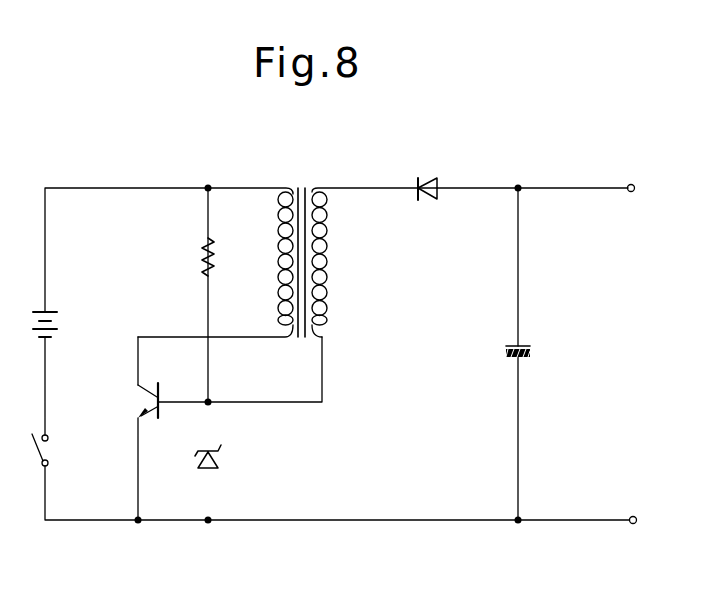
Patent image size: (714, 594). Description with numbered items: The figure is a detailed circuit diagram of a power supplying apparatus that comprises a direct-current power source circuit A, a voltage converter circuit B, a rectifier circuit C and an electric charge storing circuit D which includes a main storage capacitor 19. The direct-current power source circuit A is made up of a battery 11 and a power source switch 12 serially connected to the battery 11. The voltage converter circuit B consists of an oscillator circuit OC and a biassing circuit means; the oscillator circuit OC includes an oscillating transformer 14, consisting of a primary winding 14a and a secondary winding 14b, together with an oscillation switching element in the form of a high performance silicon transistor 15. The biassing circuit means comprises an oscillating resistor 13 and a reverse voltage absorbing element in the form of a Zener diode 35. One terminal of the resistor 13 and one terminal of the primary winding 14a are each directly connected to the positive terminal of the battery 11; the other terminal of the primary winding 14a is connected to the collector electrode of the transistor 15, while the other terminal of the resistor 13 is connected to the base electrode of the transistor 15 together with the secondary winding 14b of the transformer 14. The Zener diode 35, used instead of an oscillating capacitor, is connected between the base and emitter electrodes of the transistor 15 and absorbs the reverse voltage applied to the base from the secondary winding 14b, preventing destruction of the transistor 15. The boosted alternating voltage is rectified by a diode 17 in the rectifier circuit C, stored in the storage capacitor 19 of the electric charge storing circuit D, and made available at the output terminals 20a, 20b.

The battery 11 is at (52, 312).
The power source switch 12 is at (49, 462).
The oscillating resistor 13 is at (203, 273).
The oscillating transformer 14 is at (287, 238).
The primary winding 14a is at (278, 275).
The secondary winding 14b is at (355, 278).
The high performance silicon transistor 15 is at (148, 394).
The rectifier diode 17 is at (417, 177).
The main storage capacitor 19 is at (529, 356).
The output terminal 20a is at (631, 184).
The output terminal 20b is at (633, 524).
The Zener diode 35 is at (217, 462).
The direct-current power source circuit A is at (37, 342).
The voltage converter circuit B is at (251, 181).
The oscillator circuit OC is at (238, 194).
The rectifier circuit C is at (441, 178).
The electric charge storing circuit D is at (505, 466).